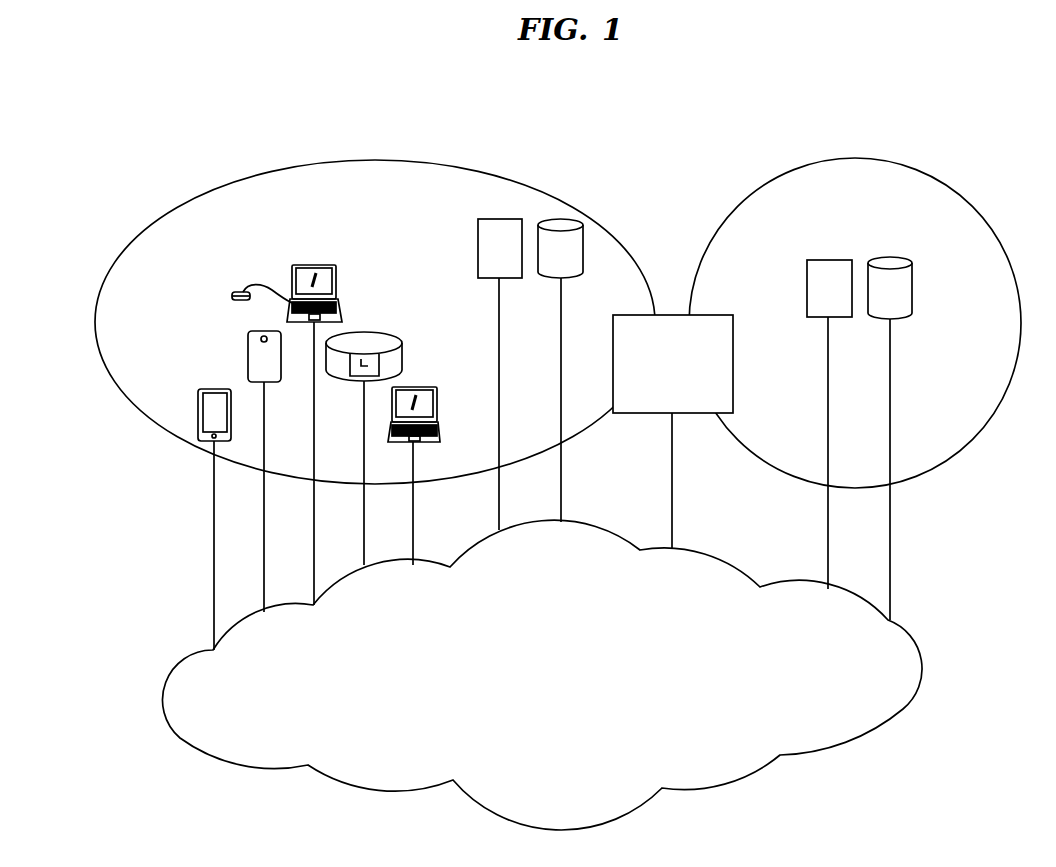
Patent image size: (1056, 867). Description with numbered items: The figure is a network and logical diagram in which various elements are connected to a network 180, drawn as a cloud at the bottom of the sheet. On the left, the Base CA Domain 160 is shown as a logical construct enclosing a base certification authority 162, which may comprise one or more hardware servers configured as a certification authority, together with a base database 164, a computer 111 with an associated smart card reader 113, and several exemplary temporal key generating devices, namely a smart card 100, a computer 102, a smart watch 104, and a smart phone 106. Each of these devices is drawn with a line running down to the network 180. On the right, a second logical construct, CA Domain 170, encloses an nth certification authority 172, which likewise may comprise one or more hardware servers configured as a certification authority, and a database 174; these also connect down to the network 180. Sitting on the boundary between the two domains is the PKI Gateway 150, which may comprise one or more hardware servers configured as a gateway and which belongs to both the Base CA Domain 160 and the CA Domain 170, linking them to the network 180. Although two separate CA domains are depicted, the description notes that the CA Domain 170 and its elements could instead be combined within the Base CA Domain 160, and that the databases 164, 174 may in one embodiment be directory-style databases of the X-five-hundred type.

The smart card 100 is at (247, 335).
The computer 102 is at (437, 389).
The smart watch 104 is at (403, 346).
The smart phone 106 is at (198, 392).
The computer 111 is at (293, 269).
The smart card reader 113 is at (235, 292).
The PKI Gateway 150 is at (669, 313).
The Base CA Domain 160 is at (548, 189).
The base certification authority 162 is at (478, 276).
The base database 164 is at (583, 273).
The CA Domain n 170 is at (753, 189).
The nth certification authority 172 is at (807, 316).
The database 174 is at (912, 314).
The network 180 is at (955, 700).